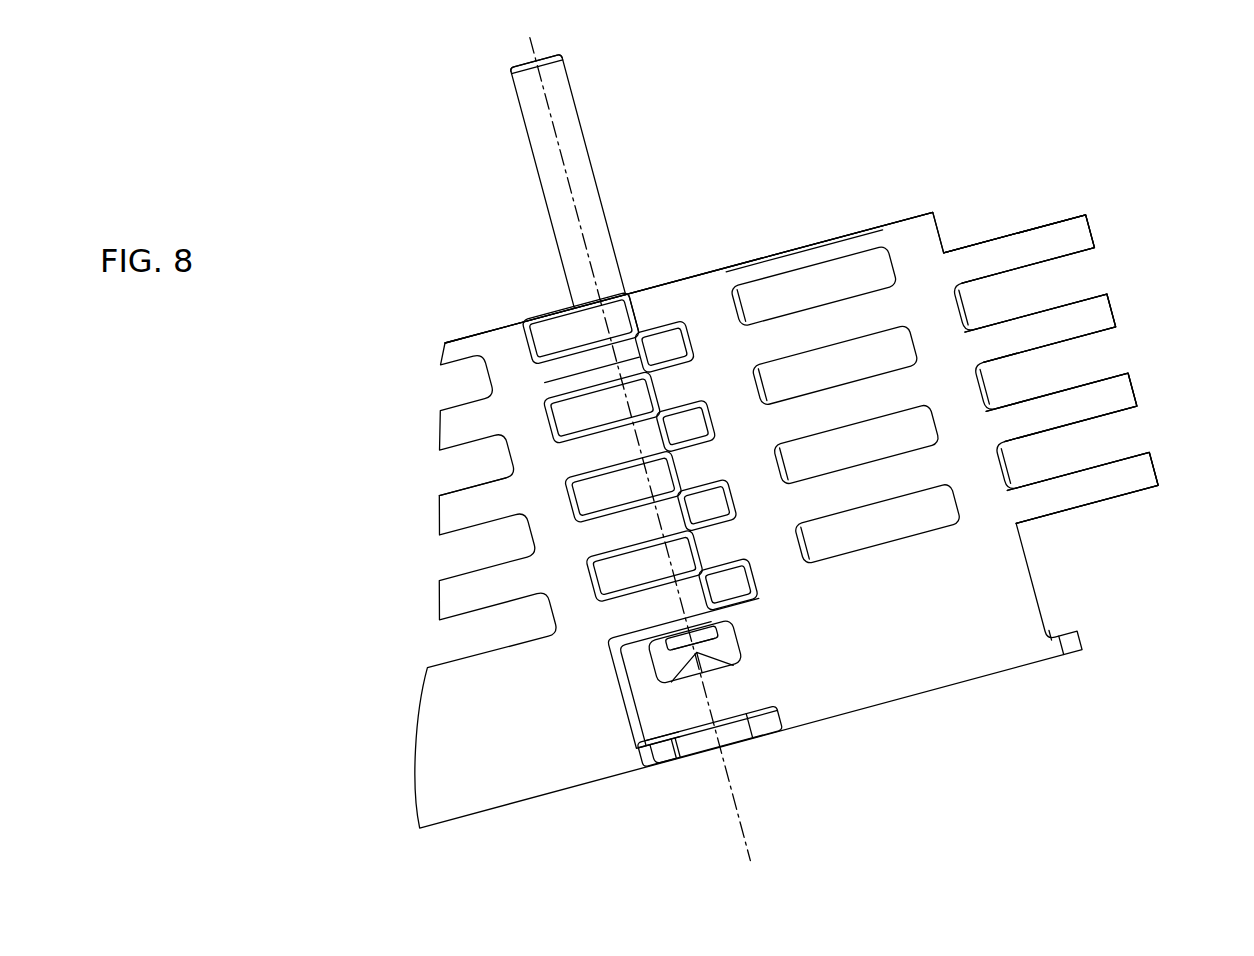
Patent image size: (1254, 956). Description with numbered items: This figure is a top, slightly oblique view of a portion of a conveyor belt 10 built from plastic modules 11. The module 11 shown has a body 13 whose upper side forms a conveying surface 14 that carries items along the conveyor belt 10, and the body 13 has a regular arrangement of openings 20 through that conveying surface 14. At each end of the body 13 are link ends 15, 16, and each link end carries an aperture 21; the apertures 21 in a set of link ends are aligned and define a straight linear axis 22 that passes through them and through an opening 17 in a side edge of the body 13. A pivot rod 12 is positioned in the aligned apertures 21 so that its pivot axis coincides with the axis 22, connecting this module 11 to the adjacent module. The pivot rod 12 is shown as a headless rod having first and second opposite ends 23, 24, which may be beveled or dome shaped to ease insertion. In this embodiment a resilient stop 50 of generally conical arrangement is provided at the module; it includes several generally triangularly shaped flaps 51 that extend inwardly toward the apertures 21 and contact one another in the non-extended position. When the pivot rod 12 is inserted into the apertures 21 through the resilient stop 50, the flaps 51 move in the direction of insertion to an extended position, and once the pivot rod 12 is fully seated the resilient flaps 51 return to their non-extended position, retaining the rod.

The conveyor belt 10 is at (374, 276).
The plastic module 11 is at (443, 512).
The pivot rod 12 is at (582, 110).
The body 13 is at (445, 348).
The conveying surface 14 is at (893, 613).
The link end 15 is at (568, 376).
The link end 16 is at (648, 310).
The opening 17 is at (716, 752).
The opening 20 is at (838, 383).
The aperture 21 is at (655, 405).
The axis 22 is at (548, 146).
The first end of pivot rod 23 is at (655, 672).
The second end of pivot rod 24 is at (525, 52).
The resilient stop 50 is at (710, 647).
The flap 51 is at (665, 743).